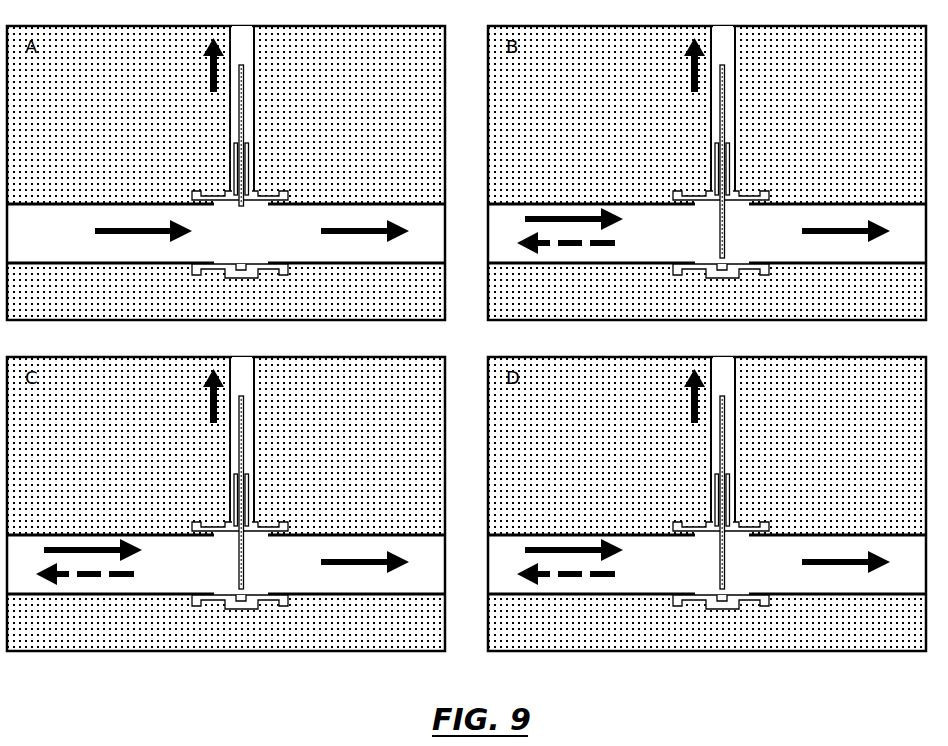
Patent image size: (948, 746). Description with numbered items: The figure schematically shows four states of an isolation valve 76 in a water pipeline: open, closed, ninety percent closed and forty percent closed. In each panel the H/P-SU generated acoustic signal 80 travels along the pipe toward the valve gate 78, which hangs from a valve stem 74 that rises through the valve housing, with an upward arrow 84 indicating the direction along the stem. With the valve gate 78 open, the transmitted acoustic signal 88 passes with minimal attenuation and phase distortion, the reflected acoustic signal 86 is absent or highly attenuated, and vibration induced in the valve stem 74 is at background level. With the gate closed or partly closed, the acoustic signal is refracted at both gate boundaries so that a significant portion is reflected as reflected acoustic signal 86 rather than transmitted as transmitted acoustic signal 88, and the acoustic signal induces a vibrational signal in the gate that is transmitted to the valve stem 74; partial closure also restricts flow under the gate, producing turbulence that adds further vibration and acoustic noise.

The valve stem 74 is at (518, 322).
The isolation valve 76 is at (509, 278).
The valve gate 78 is at (445, 336).
The H/P-SU generated acoustic signal 80 is at (319, 384).
The actuation direction 84 is at (442, 230).
The reflected acoustic signal 86 is at (342, 408).
The transmitted acoustic signal 88 is at (585, 396).